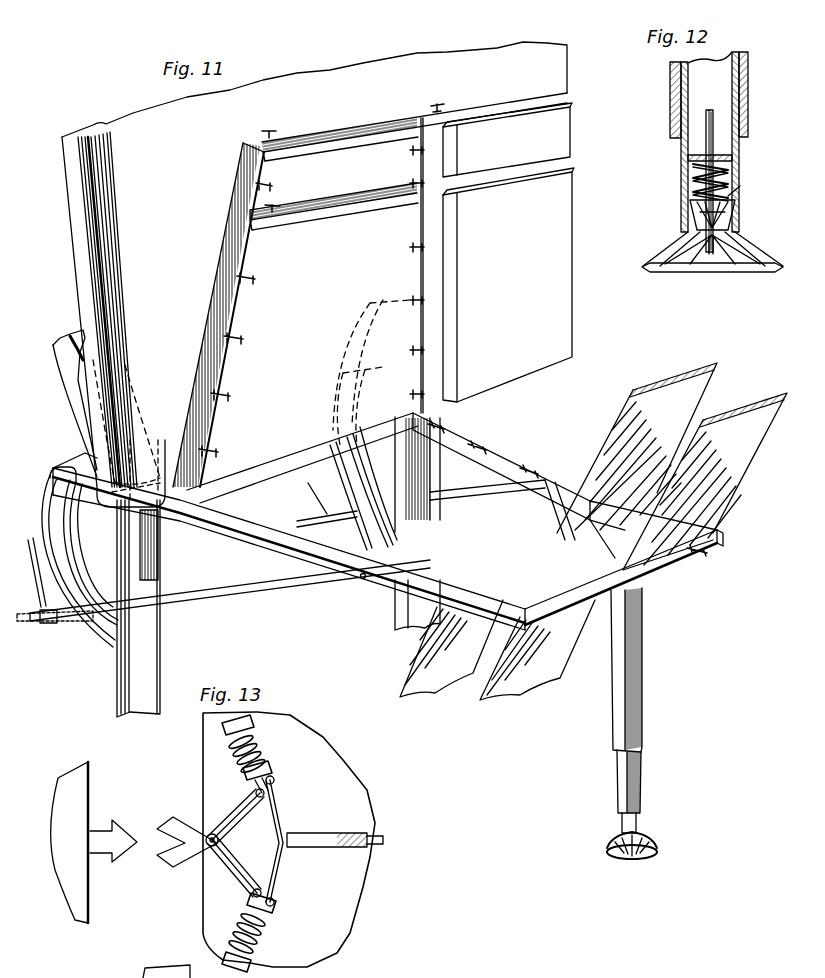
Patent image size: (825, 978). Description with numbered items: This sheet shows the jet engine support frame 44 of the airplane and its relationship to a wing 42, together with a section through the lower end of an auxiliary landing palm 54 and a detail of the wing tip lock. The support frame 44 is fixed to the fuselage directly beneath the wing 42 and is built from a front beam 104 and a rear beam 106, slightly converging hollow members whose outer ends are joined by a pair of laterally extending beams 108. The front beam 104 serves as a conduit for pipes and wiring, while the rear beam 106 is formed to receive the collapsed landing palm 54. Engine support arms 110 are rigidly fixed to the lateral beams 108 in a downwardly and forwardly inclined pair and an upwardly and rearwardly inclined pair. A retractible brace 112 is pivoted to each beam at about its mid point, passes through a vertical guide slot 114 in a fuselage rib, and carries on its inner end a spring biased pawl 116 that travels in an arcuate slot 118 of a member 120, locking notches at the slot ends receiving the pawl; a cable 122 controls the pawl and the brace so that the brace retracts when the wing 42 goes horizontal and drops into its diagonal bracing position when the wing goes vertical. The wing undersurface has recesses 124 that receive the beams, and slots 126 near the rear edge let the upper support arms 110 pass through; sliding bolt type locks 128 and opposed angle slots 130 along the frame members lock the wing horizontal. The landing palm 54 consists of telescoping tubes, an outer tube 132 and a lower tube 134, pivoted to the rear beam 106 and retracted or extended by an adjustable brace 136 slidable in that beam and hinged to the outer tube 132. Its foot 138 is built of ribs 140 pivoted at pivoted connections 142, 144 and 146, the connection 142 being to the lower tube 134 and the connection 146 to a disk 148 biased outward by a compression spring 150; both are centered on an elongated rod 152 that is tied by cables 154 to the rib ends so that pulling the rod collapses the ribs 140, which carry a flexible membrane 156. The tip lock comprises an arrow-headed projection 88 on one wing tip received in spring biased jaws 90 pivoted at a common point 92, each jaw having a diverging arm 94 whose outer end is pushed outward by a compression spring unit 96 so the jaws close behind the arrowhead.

In FIG. 11, the wing 42 is at (146, 110).
In FIG. 13, the wing 42 is at (98, 778).
In FIG. 11, the support frame 44 is at (388, 510).
In FIG. 11, the auxiliary landing palm 54 is at (646, 788).
In FIG. 13, the arrow-headed projection 88 is at (124, 856).
In FIG. 13, the jaws 90 is at (182, 865).
In FIG. 13, the common point 92 is at (210, 832).
In FIG. 13, the diverging arm 94 is at (240, 867).
In FIG. 13, the compression spring unit 96 is at (252, 938).
In FIG. 11, the front beam 104 is at (235, 528).
In FIG. 11, the rear beam 106 is at (550, 447).
In FIG. 11, the laterally extending beam 108 is at (580, 584).
In FIG. 11, the engine support arm 110 is at (720, 480).
In FIG. 11, the retractible brace 112 is at (237, 585).
In FIG. 11, the vertical guide slot 114 is at (150, 575).
In FIG. 11, the spring biased pawl 116 is at (90, 618).
In FIG. 11, the arcuate slot 118 is at (50, 500).
In FIG. 11, the member 120 is at (110, 648).
In FIG. 11, the cable 122 is at (30, 548).
In FIG. 11, the recess 124 is at (400, 205).
In FIG. 11, the slot 126 is at (520, 168).
In FIG. 11, the sliding bolt type lock 128 is at (473, 447).
In FIG. 11, the angle slot 130 is at (434, 106).
In FIG. 12, the outer tube 132 is at (669, 84).
In FIG. 12, the lower tube 134 is at (681, 153).
In FIG. 11, the adjustable brace 136 is at (547, 507).
In FIG. 11, the foot 138 is at (662, 846).
In FIG. 12, the rib 140 is at (670, 250).
In FIG. 12, the pivoted connection 142 is at (740, 230).
In FIG. 12, the pivot 144 is at (738, 215).
In FIG. 12, the pivoted connection 146 is at (736, 202).
In FIG. 12, the disk 148 is at (732, 190).
In FIG. 12, the compression spring 150 is at (692, 185).
In FIG. 12, the elongated rod 152 is at (710, 110).
In FIG. 12, the cable 154 is at (708, 256).
In FIG. 12, the flexible membrane 156 is at (672, 268).